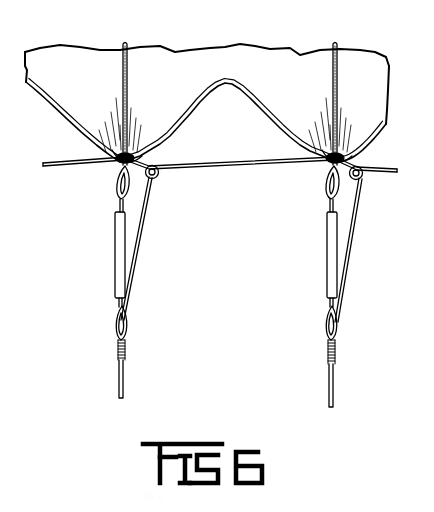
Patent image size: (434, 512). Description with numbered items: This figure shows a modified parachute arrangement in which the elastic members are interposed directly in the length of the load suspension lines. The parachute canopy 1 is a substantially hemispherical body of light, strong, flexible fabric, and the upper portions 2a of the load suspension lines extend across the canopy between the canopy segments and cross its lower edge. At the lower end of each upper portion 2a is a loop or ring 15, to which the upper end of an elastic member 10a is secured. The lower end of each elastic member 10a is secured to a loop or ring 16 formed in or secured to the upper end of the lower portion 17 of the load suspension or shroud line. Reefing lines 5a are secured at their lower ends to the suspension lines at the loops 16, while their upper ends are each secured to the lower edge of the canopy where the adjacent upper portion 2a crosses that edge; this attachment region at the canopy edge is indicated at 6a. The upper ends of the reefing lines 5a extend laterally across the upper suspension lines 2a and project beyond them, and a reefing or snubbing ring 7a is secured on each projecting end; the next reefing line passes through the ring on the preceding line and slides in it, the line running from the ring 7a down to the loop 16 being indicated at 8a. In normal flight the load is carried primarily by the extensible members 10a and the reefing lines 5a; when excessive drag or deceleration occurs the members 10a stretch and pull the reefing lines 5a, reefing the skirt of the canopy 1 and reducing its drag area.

The parachute canopy 1 is at (255, 90).
The upper portion of load suspension line 2a is at (129, 90).
The reefing line 5a is at (225, 169).
The knot/tie 6a is at (157, 150).
The reefing or snubbing ring 7a is at (158, 178).
The diagonal brace rod 8a is at (128, 313).
The elastic member 10a is at (117, 267).
The loop or ring 15 is at (115, 194).
The loop or ring 16 is at (113, 317).
The lower portion of load suspension line 17 is at (124, 373).